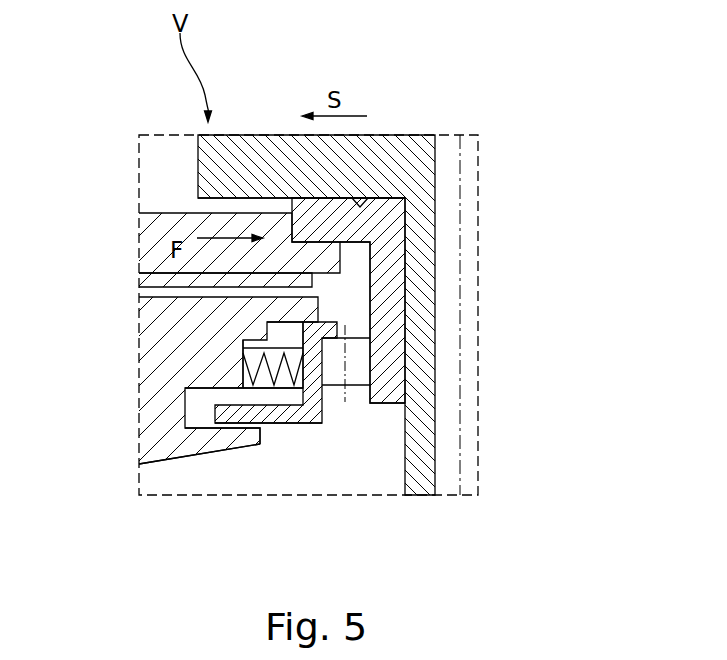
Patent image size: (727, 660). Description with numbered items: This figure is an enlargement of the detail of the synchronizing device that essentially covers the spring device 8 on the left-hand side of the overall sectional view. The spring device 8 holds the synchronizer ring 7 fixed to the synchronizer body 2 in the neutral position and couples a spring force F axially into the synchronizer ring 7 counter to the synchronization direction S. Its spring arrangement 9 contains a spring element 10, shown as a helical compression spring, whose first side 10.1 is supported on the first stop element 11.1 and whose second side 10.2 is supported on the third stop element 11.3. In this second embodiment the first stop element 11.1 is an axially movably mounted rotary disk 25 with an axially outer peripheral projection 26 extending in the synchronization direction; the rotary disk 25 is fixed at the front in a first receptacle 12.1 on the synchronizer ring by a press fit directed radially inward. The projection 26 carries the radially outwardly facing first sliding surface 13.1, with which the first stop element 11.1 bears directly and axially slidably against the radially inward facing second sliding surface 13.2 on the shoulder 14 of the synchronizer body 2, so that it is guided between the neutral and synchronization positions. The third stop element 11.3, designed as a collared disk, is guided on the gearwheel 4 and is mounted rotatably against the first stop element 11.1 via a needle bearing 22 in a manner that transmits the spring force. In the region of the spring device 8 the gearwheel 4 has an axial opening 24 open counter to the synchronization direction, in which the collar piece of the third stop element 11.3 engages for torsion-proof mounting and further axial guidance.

The synchronizer body 2 is at (465, 412).
The gearwheel 4 is at (150, 391).
The synchronizer ring 7 is at (158, 229).
The spring device 8 is at (323, 432).
The spring arrangement 9 is at (312, 372).
The spring element 10 is at (243, 340).
The first side 10.1 is at (243, 362).
The second side 10.2 is at (320, 422).
The first stop element 11.1 is at (408, 352).
The third stop element 11.3 is at (273, 428).
The first receptacle 12.1 is at (310, 239).
The first sliding surface 13.1 is at (303, 198).
The second sliding surface 13.2 is at (364, 200).
The shoulder 14 is at (213, 207).
The needle bearing 22 is at (352, 373).
The axial opening 24 is at (267, 437).
The rotary disk 25 is at (398, 293).
The projection 26 is at (341, 241).